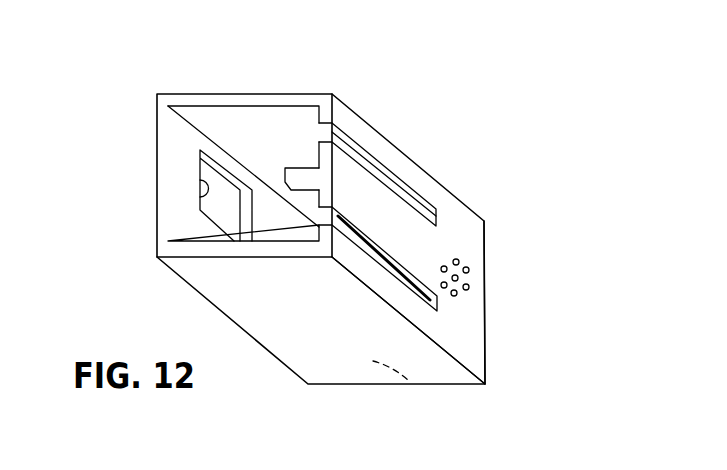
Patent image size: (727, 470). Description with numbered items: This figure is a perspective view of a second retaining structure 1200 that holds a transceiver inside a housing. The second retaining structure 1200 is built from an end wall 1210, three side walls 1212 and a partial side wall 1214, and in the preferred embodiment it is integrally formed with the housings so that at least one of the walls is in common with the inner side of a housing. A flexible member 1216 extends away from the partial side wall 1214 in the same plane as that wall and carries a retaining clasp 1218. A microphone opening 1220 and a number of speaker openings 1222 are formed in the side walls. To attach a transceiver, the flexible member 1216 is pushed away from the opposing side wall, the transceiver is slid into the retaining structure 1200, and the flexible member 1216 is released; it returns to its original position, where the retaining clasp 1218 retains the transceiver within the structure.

The second retaining structure 1200 is at (332, 230).
The end wall 1210 is at (415, 384).
The side walls 1212 is at (253, 118).
The partial side wall 1214 is at (470, 233).
The flexible member 1216 is at (397, 223).
The retaining clasp 1218 is at (313, 168).
The microphone opening 1220 is at (203, 200).
The speaker openings 1222 is at (466, 307).